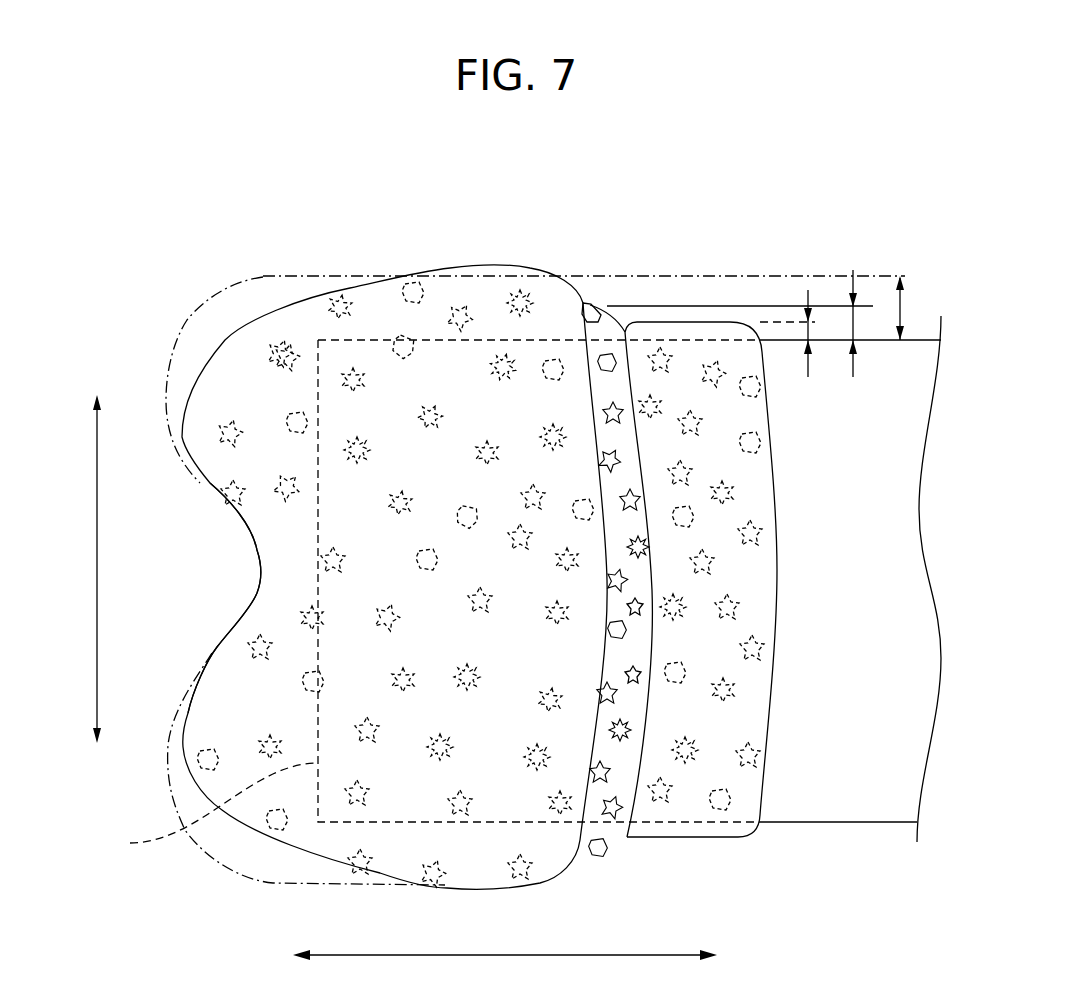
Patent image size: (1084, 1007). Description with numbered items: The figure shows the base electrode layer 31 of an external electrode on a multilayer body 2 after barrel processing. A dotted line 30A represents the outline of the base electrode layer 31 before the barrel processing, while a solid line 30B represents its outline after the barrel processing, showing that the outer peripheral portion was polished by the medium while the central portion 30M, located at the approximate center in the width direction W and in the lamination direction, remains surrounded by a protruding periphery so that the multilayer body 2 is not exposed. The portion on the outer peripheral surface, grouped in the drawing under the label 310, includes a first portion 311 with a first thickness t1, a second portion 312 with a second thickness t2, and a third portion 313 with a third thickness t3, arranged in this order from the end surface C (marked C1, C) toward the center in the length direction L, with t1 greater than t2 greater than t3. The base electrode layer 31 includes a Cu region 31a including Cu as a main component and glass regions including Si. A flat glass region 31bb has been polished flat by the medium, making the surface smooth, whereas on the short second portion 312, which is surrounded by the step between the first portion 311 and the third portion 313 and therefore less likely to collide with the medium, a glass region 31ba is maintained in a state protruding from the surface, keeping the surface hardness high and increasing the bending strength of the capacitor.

The base electrode layer 31 is at (183, 253).
The layered body 310 is at (717, 190).
The first portion 311 is at (515, 273).
The second portion 312 is at (618, 303).
The third portion 313 is at (695, 322).
The glass region 31ba is at (585, 301).
The flat glass region 31bb is at (288, 342).
The Cu region 31a is at (285, 603).
The dotted line 30A is at (187, 333).
The solid line 30B is at (200, 370).
The central portion 30M is at (285, 562).
The curve C1 is at (192, 814).
The end surface C is at (192, 814).
The multilayer body 2 is at (847, 824).
The width direction W is at (84, 569).
The length direction L is at (505, 971).
The first thickness t1 is at (912, 308).
The second thickness t2 is at (743, 323).
The third thickness t3 is at (801, 333).